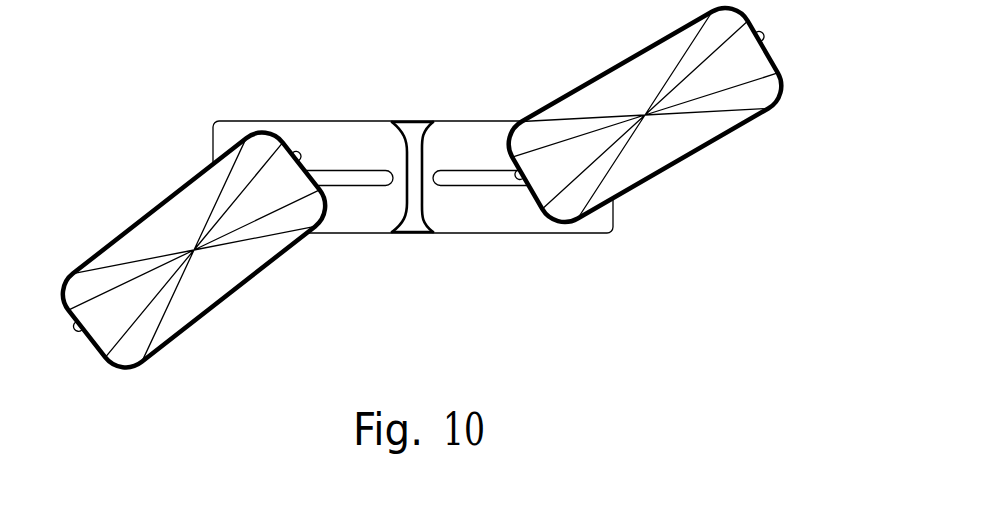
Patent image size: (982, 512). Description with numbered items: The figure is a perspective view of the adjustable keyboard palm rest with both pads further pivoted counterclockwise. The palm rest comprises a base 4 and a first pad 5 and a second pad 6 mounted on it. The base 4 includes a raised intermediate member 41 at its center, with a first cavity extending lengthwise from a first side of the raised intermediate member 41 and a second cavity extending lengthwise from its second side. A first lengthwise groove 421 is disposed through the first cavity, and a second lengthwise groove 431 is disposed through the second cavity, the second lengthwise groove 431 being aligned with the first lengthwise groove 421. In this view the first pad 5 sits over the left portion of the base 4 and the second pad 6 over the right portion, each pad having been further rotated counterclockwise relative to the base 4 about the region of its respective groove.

The base 4 is at (372, 138).
The raised intermediate member 41 is at (417, 128).
The first lengthwise groove 421 is at (318, 178).
The second lengthwise groove 431 is at (482, 178).
The first pad 5 is at (165, 225).
The second pad 6 is at (602, 107).